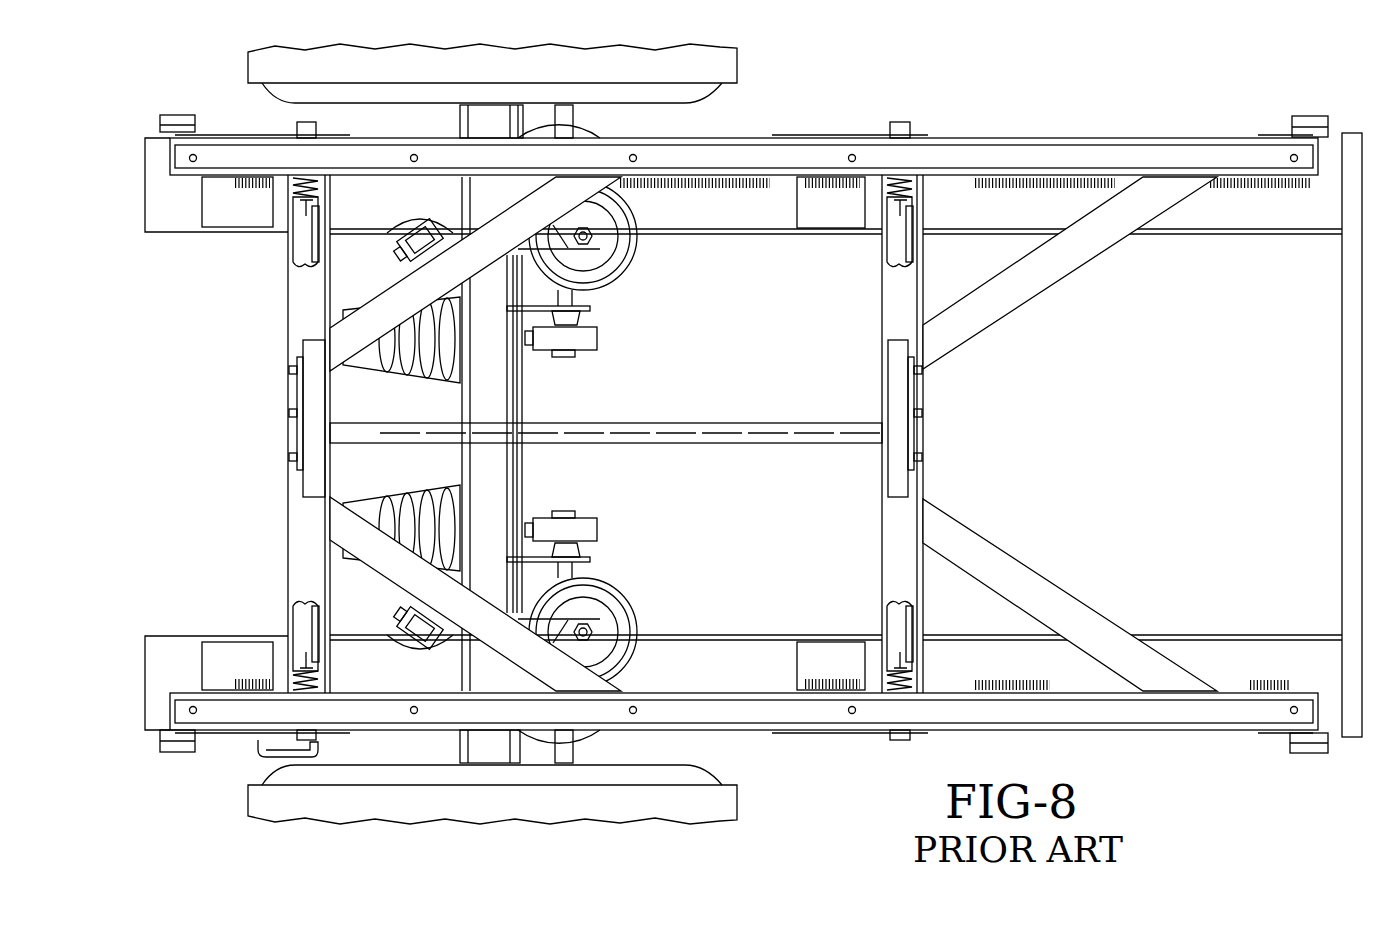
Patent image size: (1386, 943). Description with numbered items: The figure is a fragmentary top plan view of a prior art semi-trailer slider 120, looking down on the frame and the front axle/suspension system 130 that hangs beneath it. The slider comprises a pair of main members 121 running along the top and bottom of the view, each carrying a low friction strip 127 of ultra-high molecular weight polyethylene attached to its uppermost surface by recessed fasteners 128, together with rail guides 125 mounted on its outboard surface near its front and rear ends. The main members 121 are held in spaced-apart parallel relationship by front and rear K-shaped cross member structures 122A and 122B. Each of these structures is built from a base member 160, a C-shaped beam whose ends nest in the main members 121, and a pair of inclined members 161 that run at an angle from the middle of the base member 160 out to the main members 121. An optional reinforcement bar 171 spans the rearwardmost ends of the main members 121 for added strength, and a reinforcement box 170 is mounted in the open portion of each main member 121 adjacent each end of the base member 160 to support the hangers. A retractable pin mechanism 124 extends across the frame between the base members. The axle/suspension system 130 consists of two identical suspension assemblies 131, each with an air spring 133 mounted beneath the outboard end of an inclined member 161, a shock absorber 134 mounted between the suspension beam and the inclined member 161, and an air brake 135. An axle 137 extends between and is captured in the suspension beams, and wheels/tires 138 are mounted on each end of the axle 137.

The prior art semi-trailer slider 120 is at (1030, 128).
The main member 121 is at (156, 238).
The front K-shaped cross member structure 122A is at (292, 527).
The rear K-shaped cross member structure 122B is at (1092, 600).
The retractable pin mechanism 124 is at (696, 424).
The rail guide 125 is at (177, 120).
The low friction strip 127 is at (1160, 160).
The recessed fastener 128 is at (849, 155).
The front axle/suspension system 130 is at (592, 508).
The suspension assembly 131 is at (600, 278).
The air spring 133 is at (605, 254).
The shock absorber 134 is at (450, 238).
The air brake 135 is at (427, 382).
The axle 137 is at (508, 395).
The wheel/tire 138 is at (698, 60).
The base member 160 is at (305, 326).
The inclined member 161 is at (560, 197).
The reinforcement box 170 is at (212, 205).
The reinforcement bar 171 is at (1352, 318).